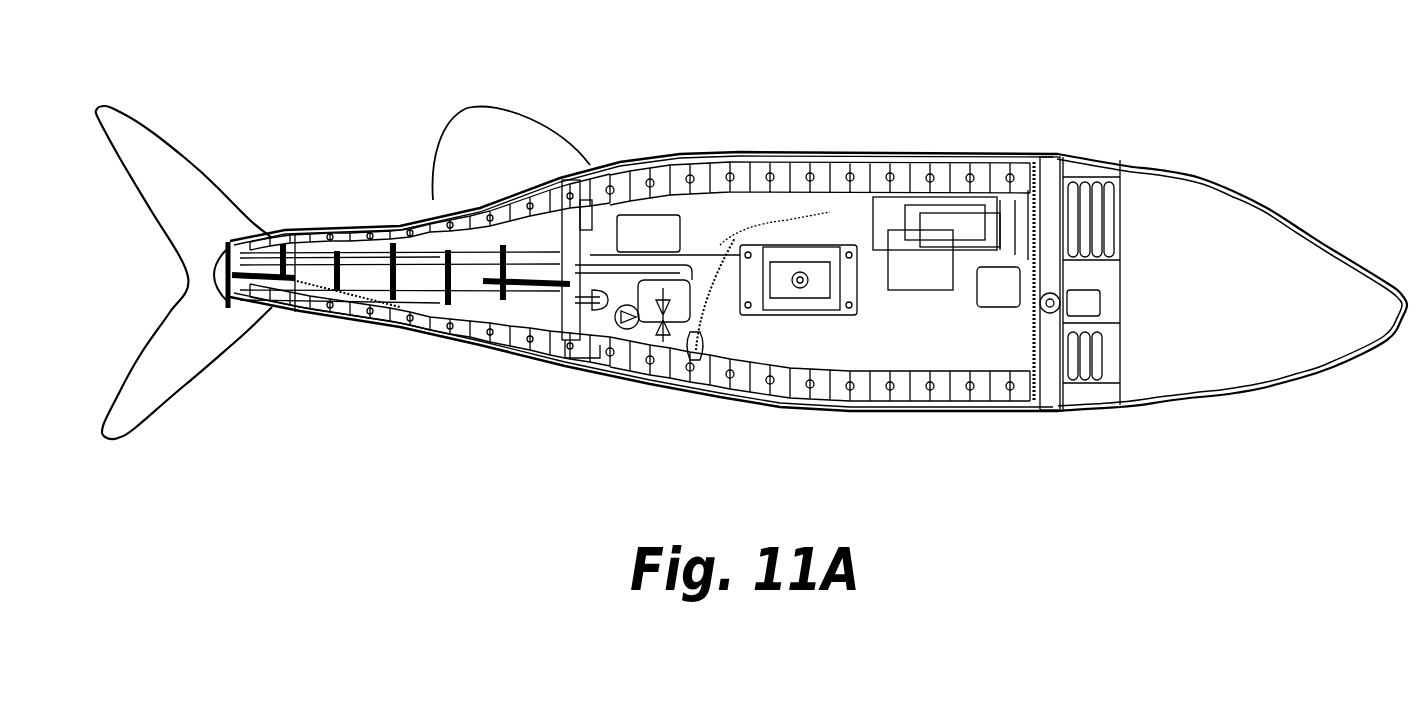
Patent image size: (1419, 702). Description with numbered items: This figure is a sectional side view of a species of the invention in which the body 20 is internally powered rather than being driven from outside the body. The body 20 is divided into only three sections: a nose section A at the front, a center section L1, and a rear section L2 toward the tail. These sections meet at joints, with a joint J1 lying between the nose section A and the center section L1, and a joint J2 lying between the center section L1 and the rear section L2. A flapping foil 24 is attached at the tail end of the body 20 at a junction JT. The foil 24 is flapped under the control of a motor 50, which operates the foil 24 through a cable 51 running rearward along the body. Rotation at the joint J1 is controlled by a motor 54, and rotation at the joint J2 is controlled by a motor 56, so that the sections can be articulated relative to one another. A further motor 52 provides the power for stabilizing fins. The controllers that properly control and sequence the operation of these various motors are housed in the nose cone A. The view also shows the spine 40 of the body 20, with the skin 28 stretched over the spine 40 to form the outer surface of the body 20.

The body 20 is at (339, 201).
The flapping foil 24 is at (140, 138).
The skin 28 is at (750, 382).
The spine 40 is at (823, 392).
The motor 50 is at (926, 292).
The cable 51 is at (690, 382).
The motor 52 is at (1001, 302).
The motor 54 is at (670, 225).
The motor 56 is at (808, 308).
The nose section A is at (1242, 221).
The junction JT is at (272, 235).
The joint J1 is at (1041, 412).
The joint J2 is at (570, 382).
The center section L1 is at (884, 150).
The rear section L2 is at (415, 192).